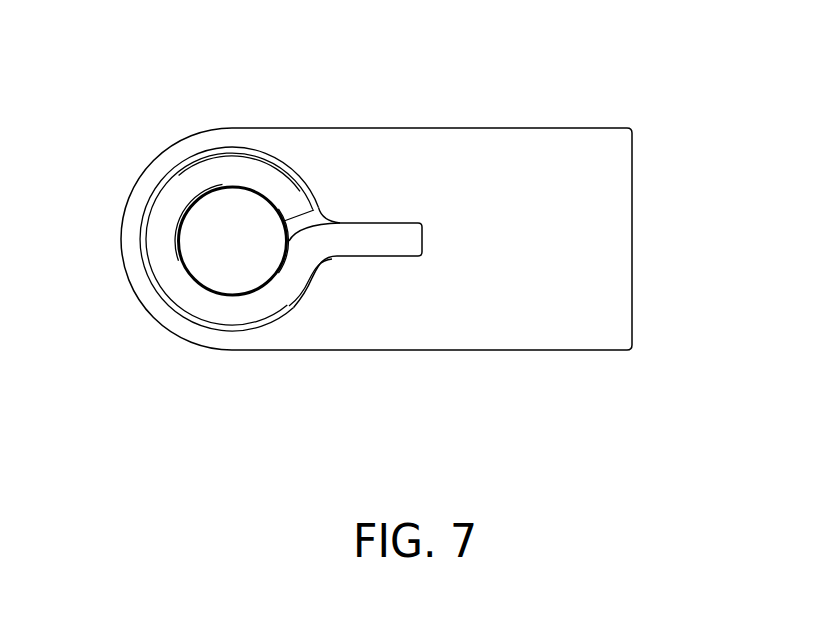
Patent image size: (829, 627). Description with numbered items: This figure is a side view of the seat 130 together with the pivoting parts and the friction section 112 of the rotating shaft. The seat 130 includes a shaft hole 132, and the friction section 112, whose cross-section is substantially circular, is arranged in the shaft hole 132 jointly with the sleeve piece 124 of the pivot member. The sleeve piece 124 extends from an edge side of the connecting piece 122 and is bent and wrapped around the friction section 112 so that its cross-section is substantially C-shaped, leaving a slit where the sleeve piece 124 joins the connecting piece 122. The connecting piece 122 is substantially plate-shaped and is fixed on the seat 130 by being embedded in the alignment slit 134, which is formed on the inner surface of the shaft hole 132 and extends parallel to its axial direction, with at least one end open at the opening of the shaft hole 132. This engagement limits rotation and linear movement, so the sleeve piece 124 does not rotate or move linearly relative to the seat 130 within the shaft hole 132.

The seat 130 is at (639, 100).
The shaft hole 132 is at (155, 166).
The sleeve piece 124 is at (244, 152).
The friction section 112 is at (255, 253).
The connecting piece 122 is at (387, 240).
The alignment slit 134 is at (374, 211).